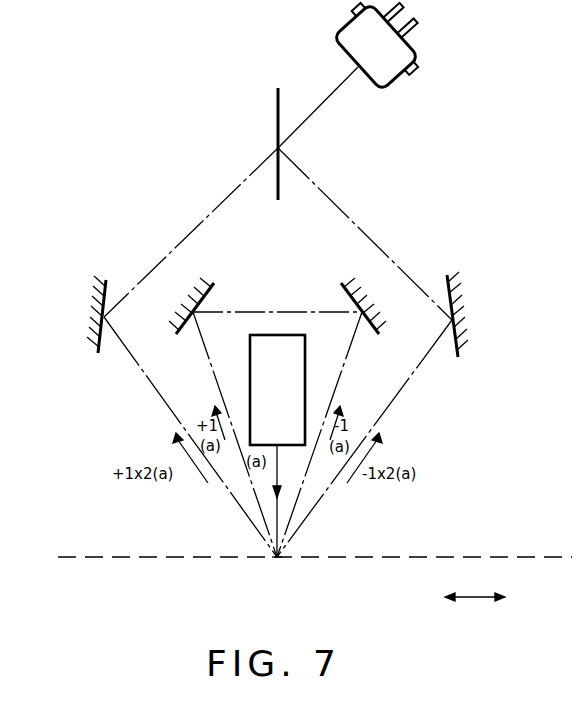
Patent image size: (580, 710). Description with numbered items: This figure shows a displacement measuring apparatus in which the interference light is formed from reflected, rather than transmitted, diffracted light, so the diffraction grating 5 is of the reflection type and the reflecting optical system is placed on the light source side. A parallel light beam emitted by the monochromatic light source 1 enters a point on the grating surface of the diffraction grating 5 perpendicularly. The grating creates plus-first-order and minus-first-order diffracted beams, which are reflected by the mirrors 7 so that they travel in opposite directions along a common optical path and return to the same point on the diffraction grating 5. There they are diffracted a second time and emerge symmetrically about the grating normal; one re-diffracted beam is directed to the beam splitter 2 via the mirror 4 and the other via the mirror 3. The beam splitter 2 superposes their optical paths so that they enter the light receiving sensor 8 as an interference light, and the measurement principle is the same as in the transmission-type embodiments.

The monochromatic light source 1 is at (306, 352).
The beam splitter 2 is at (280, 186).
The mirror 3 is at (84, 316).
The mirror 4 is at (466, 319).
The diffraction grating 5 is at (530, 556).
The mirror 7 is at (381, 312).
The light receiving sensor 8 is at (400, 78).